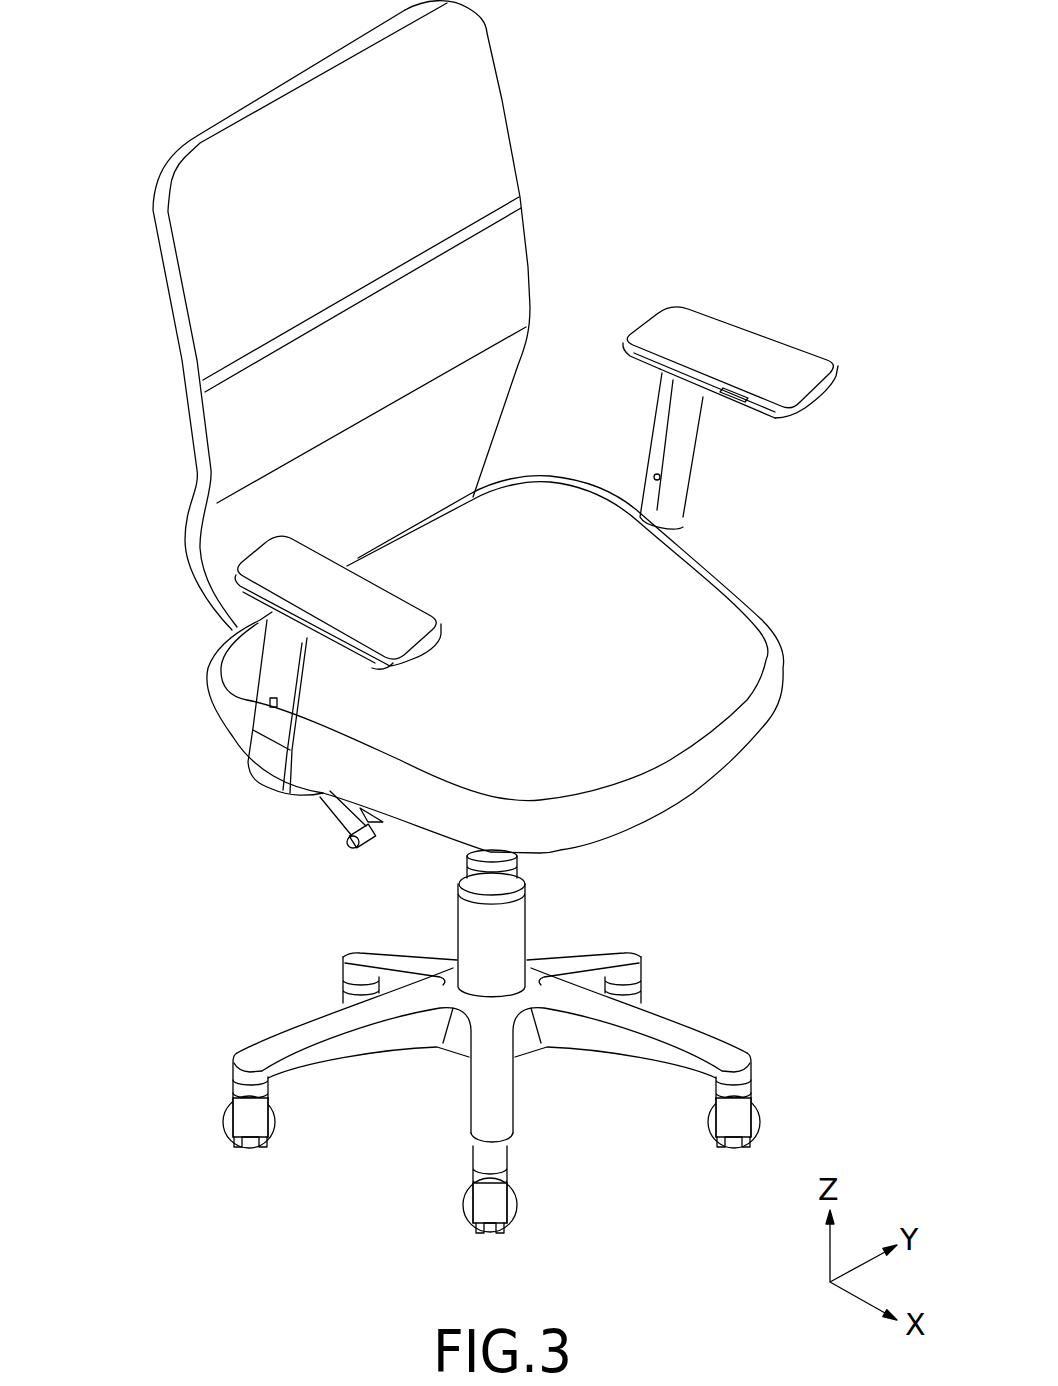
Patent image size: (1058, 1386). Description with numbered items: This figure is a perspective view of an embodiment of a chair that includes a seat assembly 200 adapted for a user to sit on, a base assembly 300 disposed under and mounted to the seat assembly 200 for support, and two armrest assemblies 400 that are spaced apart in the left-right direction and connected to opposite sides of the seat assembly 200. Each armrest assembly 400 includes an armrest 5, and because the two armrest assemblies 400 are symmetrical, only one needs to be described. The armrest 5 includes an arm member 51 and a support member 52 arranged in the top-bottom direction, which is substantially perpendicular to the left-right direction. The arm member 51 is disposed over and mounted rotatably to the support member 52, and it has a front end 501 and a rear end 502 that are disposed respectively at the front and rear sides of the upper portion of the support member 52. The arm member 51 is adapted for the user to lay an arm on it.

The seat assembly 200 is at (777, 640).
The base assembly 300 is at (670, 1015).
The armrest assembly 400 is at (799, 308).
The armrest 5 is at (692, 465).
The support member 52 is at (475, 584).
The arm member 51 is at (703, 332).
The front end 501 is at (823, 392).
The rear end 502 is at (648, 315).